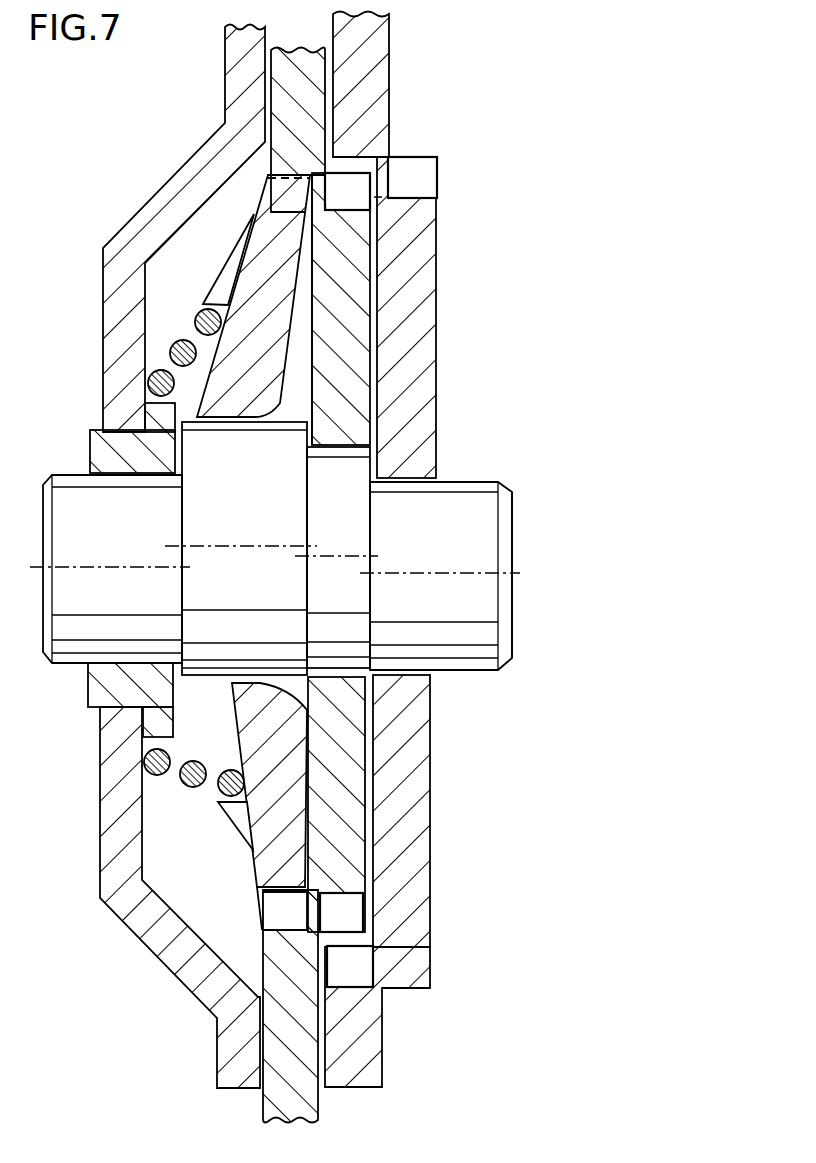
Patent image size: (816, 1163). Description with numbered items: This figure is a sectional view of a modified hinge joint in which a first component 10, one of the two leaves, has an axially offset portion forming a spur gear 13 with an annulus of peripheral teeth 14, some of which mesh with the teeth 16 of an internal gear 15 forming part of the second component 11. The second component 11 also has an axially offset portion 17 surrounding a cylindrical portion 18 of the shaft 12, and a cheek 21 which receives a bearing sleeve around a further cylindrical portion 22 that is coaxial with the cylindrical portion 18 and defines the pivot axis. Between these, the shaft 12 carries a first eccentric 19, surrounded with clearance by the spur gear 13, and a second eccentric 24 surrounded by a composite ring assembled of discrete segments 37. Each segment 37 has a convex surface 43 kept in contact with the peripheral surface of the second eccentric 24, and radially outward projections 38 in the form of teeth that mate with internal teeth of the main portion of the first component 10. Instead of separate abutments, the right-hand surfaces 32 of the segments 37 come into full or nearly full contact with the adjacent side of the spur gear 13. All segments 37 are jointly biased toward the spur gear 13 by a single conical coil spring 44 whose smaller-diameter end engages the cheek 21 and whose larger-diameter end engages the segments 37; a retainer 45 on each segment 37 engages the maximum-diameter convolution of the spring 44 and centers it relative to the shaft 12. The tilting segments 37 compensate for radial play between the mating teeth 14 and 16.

The first component 10 is at (280, 1070).
The second component 11 is at (375, 111).
The shaft 12 is at (512, 528).
The spur gear 13 is at (343, 338).
The peripheral teeth 14 is at (345, 915).
The internal gear 15 is at (349, 994).
The teeth of internal gear 16 is at (353, 968).
The axially offset portion 17 is at (410, 437).
The cylindrical portion 18 is at (440, 576).
The first eccentric 19 is at (336, 557).
The cheek 21 is at (117, 302).
The cylindrical portion 22 is at (110, 569).
The second eccentric 24 is at (241, 548).
The abutment surfaces 32 is at (305, 386).
The segments 37 is at (270, 313).
The projections 38 is at (263, 203).
The convex surface 43 is at (280, 403).
The conical coil spring 44 is at (168, 350).
The retainer 45 is at (213, 297).